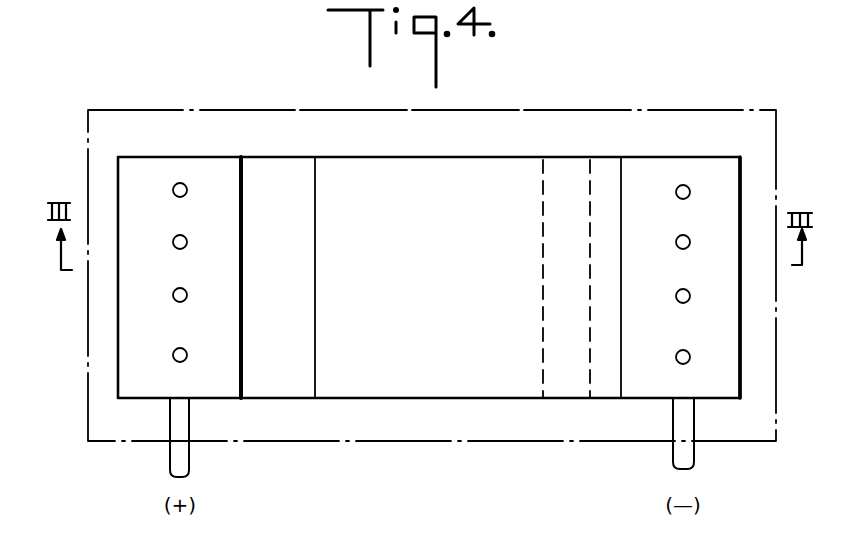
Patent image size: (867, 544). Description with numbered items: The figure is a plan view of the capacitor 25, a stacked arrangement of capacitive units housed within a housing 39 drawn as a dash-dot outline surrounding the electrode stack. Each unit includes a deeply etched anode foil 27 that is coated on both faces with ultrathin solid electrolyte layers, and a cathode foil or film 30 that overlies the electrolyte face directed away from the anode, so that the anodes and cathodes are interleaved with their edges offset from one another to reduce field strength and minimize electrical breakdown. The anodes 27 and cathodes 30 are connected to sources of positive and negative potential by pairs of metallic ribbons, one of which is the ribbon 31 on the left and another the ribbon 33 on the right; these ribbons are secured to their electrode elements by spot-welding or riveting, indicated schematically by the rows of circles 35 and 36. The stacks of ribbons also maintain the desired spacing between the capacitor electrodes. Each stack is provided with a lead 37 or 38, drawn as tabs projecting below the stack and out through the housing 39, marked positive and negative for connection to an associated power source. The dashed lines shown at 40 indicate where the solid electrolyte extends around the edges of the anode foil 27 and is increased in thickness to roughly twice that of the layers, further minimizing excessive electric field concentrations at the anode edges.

The capacitor 25 is at (643, 103).
The anode foil 27 is at (290, 173).
The cathode foil or film 30 is at (438, 172).
The metallic ribbon 31 is at (222, 173).
The metallic ribbon 33 is at (730, 170).
The spot weld or rivet 35 is at (176, 184).
The spot weld or rivet 36 is at (683, 185).
The lead 37 is at (184, 433).
The lead 38 is at (684, 432).
The housing 39 is at (508, 117).
The thickened electrolyte region 40 is at (592, 178).